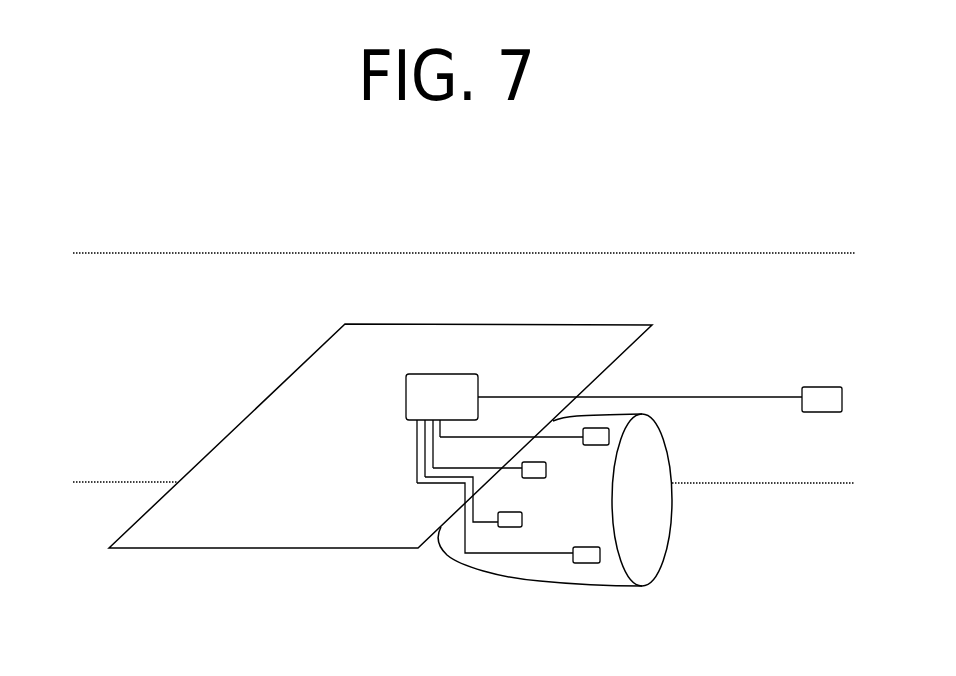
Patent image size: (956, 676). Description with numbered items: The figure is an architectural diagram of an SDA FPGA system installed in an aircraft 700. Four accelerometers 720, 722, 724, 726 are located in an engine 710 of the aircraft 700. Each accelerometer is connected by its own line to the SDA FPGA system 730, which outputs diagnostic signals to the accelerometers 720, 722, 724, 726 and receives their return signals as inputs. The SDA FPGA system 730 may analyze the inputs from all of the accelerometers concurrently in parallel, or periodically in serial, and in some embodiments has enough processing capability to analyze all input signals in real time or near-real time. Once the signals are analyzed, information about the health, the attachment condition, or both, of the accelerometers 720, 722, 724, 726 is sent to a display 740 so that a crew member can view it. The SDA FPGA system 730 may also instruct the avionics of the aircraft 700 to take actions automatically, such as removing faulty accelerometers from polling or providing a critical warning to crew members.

The aircraft 700 is at (123, 236).
The engine 710 is at (673, 530).
The accelerometer 720 is at (513, 528).
The accelerometer 722 is at (534, 478).
The accelerometer 724 is at (585, 563).
The accelerometer 726 is at (597, 445).
The SDA FPGA system 730 is at (442, 375).
The display 740 is at (820, 385).